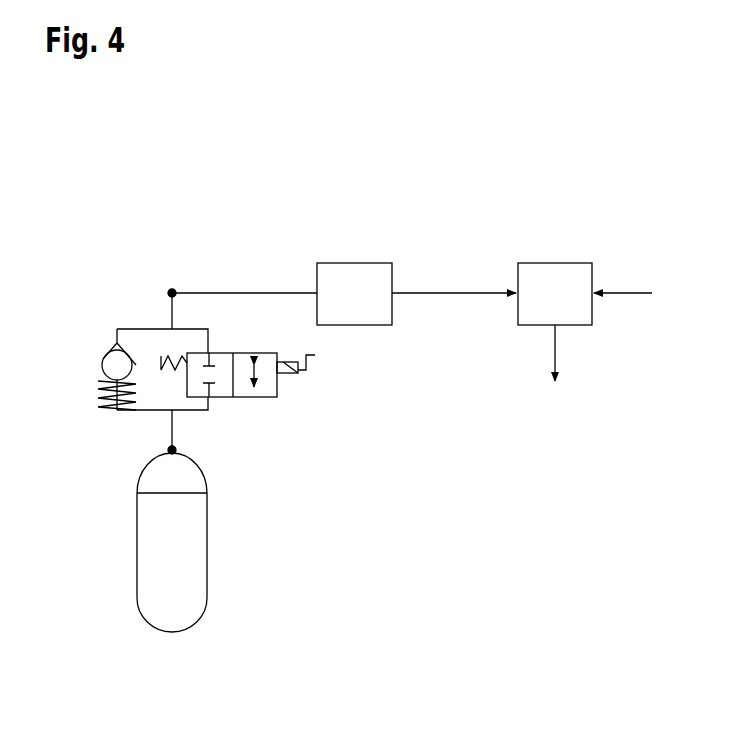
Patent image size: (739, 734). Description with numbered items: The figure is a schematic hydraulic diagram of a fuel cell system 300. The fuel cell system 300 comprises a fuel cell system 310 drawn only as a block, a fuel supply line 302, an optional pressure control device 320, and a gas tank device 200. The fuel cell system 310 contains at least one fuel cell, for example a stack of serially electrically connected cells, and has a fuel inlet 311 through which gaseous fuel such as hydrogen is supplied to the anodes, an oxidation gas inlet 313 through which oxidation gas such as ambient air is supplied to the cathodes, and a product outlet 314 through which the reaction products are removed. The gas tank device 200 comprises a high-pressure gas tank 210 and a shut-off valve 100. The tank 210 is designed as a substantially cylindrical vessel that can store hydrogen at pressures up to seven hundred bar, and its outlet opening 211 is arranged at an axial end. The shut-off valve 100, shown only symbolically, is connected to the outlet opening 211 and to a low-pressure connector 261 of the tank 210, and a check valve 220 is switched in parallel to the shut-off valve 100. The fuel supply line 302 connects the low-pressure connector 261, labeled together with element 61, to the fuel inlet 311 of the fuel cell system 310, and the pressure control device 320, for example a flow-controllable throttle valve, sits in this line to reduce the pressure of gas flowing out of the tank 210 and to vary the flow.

The fuel cell system 300 is at (210, 170).
The gas tank device 200 is at (103, 274).
The pressure sensor 61 is at (172, 289).
The low-pressure connector 261 is at (184, 277).
The fuel supply line 302 is at (265, 291).
The pressure control device 320 is at (373, 307).
The fuel cell system 310 is at (573, 307).
The fuel inlet 311 is at (516, 270).
The oxidation gas inlet 313 is at (595, 283).
The product outlet 314 is at (557, 345).
The shut-off valve 100 is at (265, 397).
The check valve 220 is at (102, 362).
The outlet opening 211 is at (168, 450).
The high-pressure gas tank 210 is at (207, 545).